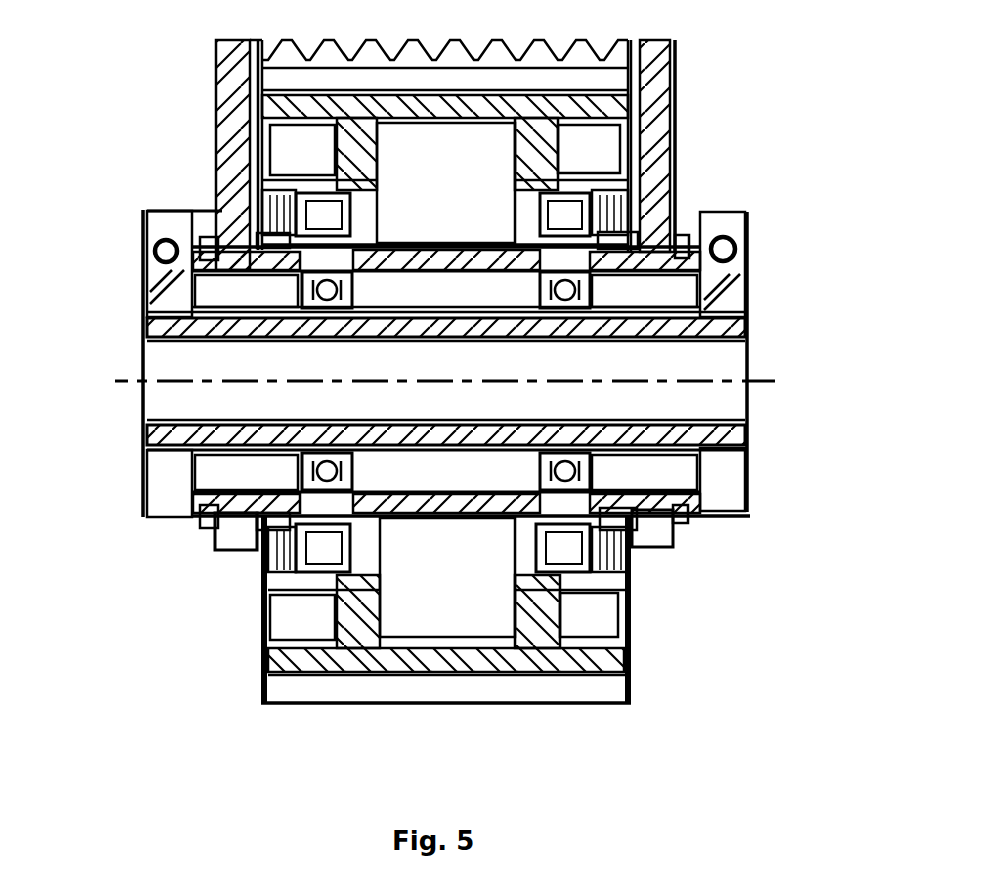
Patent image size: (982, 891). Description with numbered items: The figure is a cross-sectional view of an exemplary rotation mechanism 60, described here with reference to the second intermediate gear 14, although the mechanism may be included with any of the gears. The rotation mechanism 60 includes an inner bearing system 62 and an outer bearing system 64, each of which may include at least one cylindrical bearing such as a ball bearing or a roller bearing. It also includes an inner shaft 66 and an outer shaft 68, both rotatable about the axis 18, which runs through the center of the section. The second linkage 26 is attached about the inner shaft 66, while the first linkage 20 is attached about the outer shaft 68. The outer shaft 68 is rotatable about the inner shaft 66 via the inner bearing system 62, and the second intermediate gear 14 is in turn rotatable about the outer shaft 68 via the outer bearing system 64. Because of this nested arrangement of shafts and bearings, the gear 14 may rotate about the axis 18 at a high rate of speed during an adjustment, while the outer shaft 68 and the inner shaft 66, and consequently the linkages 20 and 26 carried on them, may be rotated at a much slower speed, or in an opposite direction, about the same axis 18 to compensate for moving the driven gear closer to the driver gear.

The second intermediate gear 14 is at (348, 678).
The axis 18 is at (775, 378).
The first linkage 20 is at (230, 77).
The second linkage 26 is at (167, 292).
The rotation mechanism 60 is at (800, 277).
The inner bearing system 62 is at (590, 277).
The outer bearing system 64 is at (322, 215).
The inner shaft 66 is at (200, 432).
The outer shaft 68 is at (493, 267).